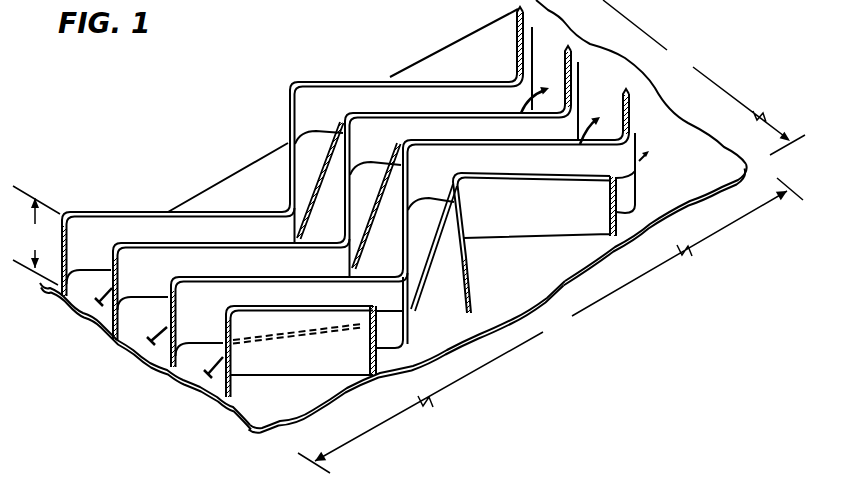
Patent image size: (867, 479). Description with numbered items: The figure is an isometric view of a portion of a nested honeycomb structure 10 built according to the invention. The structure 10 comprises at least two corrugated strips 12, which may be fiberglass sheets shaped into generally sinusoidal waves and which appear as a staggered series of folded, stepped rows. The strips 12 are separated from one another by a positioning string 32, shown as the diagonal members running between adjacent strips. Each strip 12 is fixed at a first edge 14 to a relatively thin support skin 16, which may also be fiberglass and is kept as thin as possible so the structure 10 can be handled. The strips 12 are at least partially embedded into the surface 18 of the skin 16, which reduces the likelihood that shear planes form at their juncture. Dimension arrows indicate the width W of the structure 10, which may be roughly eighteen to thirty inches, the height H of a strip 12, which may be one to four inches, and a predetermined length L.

The nested honeycomb structure 10 is at (130, 138).
The corrugated strip 12 is at (567, 48).
The first edge 14 is at (519, 238).
The support skin 16 is at (720, 182).
The surface 18 is at (692, 170).
The positioning string 32 is at (368, 223).